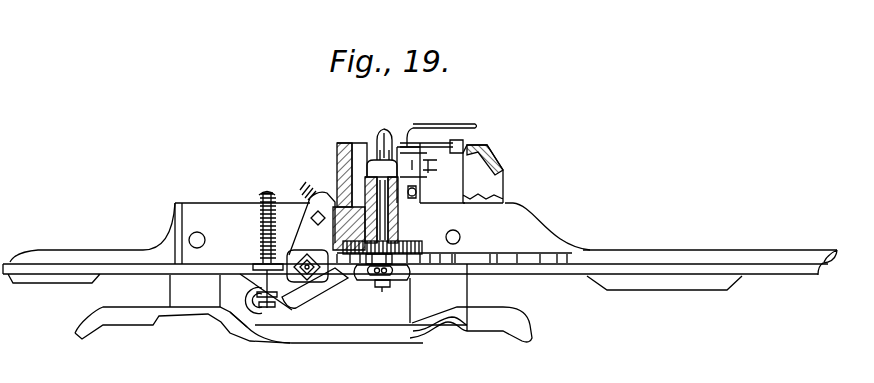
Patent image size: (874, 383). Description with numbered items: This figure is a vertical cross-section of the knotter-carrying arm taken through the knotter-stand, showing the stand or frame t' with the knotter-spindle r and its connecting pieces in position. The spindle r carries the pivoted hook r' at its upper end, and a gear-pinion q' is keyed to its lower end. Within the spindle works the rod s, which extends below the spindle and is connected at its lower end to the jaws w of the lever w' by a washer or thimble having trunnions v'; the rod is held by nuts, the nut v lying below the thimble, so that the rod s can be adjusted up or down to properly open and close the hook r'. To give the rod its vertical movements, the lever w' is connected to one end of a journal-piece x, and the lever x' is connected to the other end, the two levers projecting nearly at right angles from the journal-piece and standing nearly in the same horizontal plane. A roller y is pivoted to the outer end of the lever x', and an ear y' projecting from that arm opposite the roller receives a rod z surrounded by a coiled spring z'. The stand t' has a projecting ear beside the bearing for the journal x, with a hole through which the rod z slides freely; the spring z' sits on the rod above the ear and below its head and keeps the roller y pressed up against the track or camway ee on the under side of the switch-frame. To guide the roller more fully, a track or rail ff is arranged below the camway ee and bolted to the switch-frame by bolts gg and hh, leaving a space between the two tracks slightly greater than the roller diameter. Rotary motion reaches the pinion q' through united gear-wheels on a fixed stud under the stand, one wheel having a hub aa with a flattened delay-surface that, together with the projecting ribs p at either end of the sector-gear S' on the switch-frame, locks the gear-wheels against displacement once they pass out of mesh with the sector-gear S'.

The projecting ribs p is at (6, 263).
The rod s is at (423, 235).
The sector-gear S' is at (452, 279).
The bolts hh is at (380, 255).
The track or rail ff is at (313, 330).
The track or camway ee is at (691, 286).
The hub aa is at (471, 303).
The rod z is at (241, 238).
The coiled spring z' is at (249, 222).
The ear y' is at (251, 325).
The roller y is at (224, 336).
The journal-piece x is at (307, 277).
The lever w' is at (307, 220).
The lever x' is at (315, 297).
The jaws w is at (374, 293).
The nut v is at (409, 232).
The trunnions v' is at (389, 300).
The gear-pinion q' is at (382, 240).
The stand or frame t' is at (334, 191).
The knotter-spindle r is at (372, 181).
The hook r' is at (384, 135).
The lever l is at (438, 129).
The bolts gg is at (461, 238).